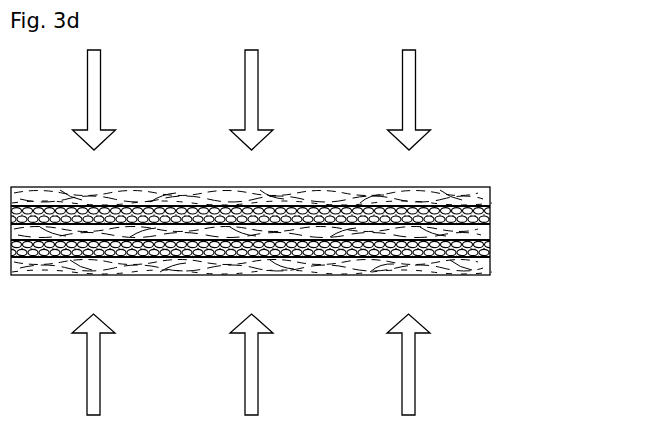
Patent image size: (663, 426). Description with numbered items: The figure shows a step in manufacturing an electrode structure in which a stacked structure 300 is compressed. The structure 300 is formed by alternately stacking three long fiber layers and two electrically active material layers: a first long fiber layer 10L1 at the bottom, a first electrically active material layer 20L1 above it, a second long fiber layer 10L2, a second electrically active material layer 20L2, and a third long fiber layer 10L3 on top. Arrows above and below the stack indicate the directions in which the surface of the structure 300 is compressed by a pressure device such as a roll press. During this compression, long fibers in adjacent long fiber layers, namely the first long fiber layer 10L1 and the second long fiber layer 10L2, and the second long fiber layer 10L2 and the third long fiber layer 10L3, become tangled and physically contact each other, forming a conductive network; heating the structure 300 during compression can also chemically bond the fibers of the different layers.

The structure 300 is at (486, 126).
The third long fiber layer 10L3 is at (487, 197).
The second electrically active material layer 20L2 is at (487, 212).
The second long fiber layer 10L2 is at (487, 233).
The first electrically active material layer 20L1 is at (487, 248).
The first long fiber layer 10L1 is at (489, 268).